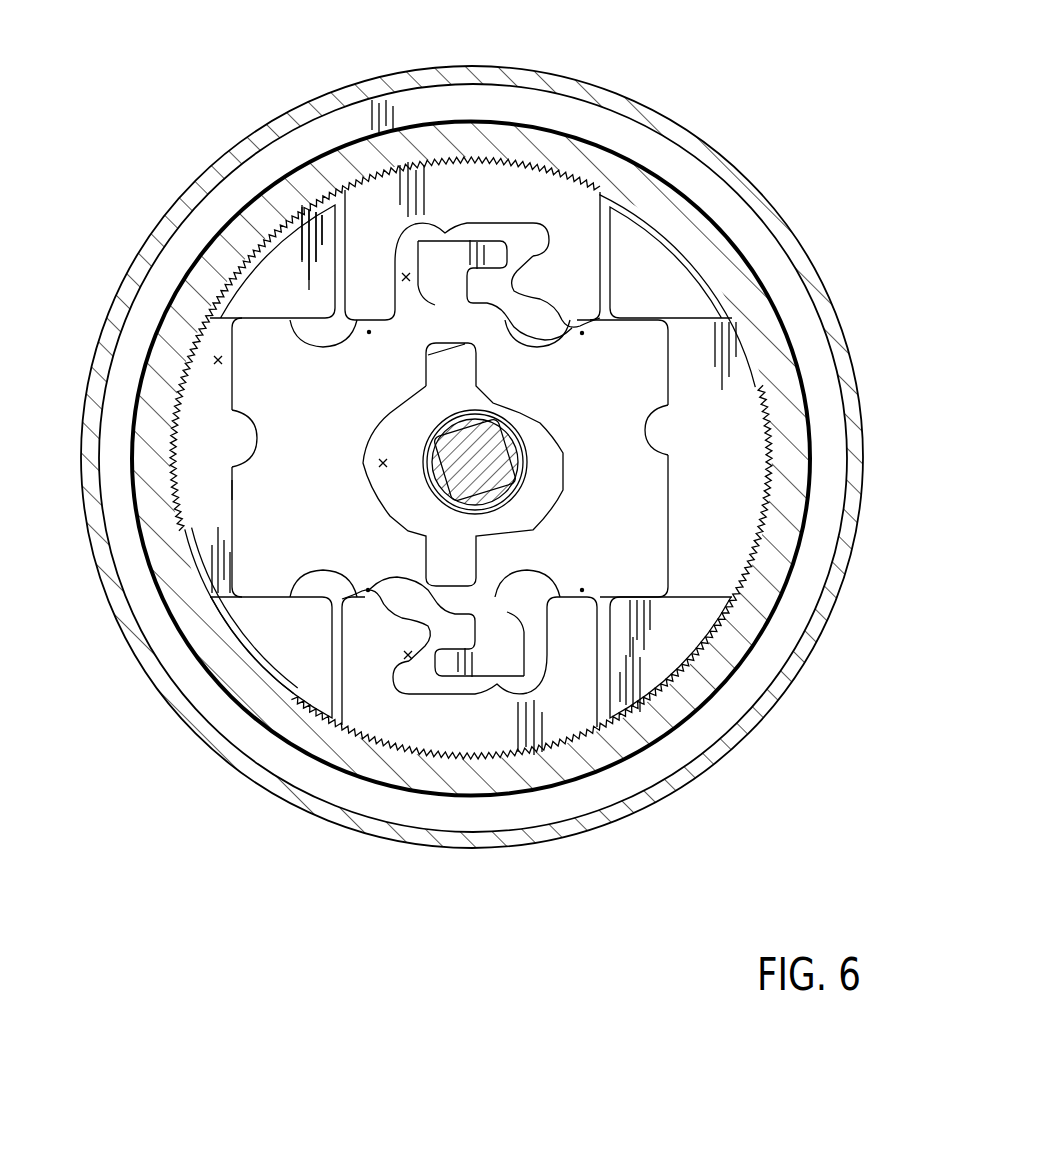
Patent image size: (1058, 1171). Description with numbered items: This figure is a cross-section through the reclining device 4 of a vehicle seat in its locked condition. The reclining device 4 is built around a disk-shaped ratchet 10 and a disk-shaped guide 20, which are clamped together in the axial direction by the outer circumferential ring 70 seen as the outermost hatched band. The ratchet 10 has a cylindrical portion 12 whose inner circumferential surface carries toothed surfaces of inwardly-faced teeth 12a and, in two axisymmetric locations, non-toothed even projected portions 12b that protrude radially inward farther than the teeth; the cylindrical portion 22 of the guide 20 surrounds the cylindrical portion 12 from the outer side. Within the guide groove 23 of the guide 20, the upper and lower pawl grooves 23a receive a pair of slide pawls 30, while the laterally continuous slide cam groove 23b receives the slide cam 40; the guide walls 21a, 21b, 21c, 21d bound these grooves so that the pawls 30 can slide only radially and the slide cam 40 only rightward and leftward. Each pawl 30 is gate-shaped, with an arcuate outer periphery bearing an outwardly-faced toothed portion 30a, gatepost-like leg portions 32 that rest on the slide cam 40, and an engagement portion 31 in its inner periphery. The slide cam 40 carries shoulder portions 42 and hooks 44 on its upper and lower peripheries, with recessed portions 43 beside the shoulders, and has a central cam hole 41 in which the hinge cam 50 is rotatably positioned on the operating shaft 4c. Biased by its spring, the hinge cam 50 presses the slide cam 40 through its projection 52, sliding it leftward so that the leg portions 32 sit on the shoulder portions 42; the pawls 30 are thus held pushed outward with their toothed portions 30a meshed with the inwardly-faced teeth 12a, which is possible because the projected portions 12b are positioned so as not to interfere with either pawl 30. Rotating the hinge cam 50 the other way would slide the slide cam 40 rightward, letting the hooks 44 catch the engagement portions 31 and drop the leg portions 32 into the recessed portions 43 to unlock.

The reclining device 4 is at (716, 96).
The operating shaft 4c is at (486, 466).
The ratchet 10 is at (471, 415).
The cylindrical portion 12 is at (362, 152).
The inwardly-faced teeth 12a is at (457, 153).
The projected portion 12b is at (667, 249).
The guide 20 is at (518, 459).
The guide wall 21a is at (690, 309).
The guide wall 21b is at (298, 287).
The guide wall 21c is at (661, 625).
The guide wall 21d is at (262, 606).
The cylindrical portion 22 is at (754, 237).
The guide groove 23 is at (229, 489).
The pawl groove 23a is at (406, 274).
The slide cam groove 23b is at (218, 357).
The slide pawl 30 is at (471, 464).
The outwardly-faced toothed portion 30a is at (471, 464).
The engagement portion 31 is at (528, 269).
The leg portion 32 is at (371, 302).
The slide cam 40 is at (645, 477).
The cam hole 41 is at (380, 463).
The shoulder portion 42 is at (369, 334).
The recessed portion 43 is at (327, 336).
The hook 44 is at (492, 251).
The hinge cam 50 is at (524, 434).
The projection 52 is at (449, 361).
The outer circumferential ring 70 is at (737, 174).